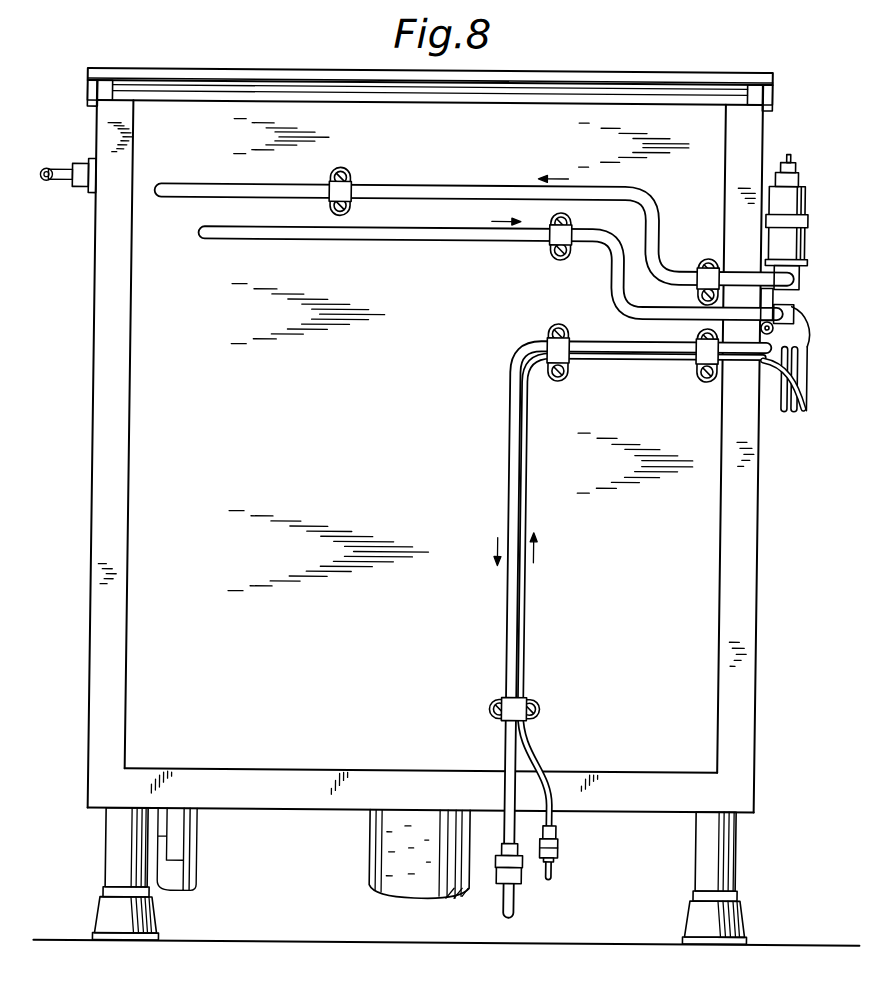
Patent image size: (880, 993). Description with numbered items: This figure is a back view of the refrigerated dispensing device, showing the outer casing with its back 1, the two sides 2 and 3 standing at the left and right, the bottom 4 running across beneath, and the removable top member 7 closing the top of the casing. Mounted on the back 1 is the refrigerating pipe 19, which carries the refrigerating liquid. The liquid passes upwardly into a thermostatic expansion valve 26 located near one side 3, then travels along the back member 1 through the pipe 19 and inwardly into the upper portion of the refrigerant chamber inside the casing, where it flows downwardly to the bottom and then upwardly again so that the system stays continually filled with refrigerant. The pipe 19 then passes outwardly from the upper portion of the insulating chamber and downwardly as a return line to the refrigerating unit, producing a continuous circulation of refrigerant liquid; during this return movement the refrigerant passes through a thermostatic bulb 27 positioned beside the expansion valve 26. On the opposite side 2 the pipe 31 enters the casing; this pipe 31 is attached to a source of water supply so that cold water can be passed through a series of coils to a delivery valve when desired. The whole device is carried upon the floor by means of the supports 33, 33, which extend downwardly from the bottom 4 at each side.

The back 1 is at (426, 347).
The side 2 is at (92, 524).
The side 3 is at (759, 526).
The bottom 4 is at (316, 813).
The removable top member 7 is at (690, 71).
The refrigerating pipe 19 is at (456, 192).
The thermostatic expansion valve 26 is at (809, 182).
The thermostatic bulb 27 is at (760, 327).
The pipe 31 is at (56, 172).
The support 33 is at (120, 855).